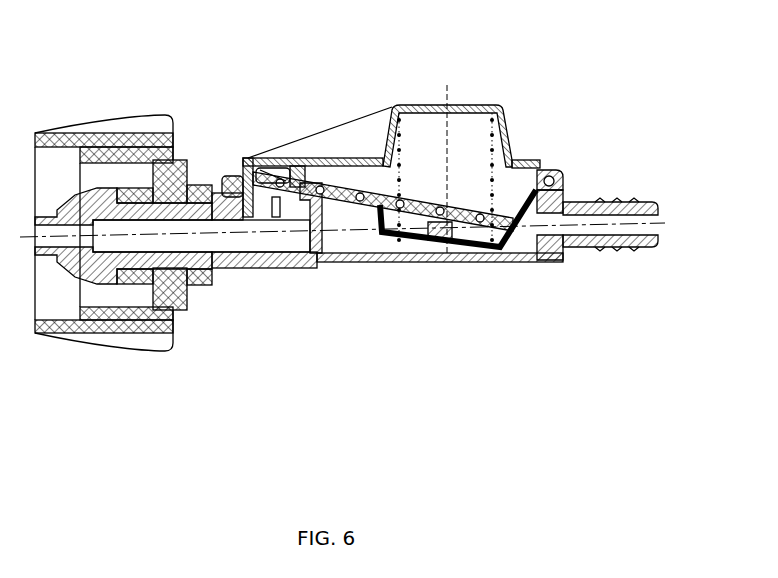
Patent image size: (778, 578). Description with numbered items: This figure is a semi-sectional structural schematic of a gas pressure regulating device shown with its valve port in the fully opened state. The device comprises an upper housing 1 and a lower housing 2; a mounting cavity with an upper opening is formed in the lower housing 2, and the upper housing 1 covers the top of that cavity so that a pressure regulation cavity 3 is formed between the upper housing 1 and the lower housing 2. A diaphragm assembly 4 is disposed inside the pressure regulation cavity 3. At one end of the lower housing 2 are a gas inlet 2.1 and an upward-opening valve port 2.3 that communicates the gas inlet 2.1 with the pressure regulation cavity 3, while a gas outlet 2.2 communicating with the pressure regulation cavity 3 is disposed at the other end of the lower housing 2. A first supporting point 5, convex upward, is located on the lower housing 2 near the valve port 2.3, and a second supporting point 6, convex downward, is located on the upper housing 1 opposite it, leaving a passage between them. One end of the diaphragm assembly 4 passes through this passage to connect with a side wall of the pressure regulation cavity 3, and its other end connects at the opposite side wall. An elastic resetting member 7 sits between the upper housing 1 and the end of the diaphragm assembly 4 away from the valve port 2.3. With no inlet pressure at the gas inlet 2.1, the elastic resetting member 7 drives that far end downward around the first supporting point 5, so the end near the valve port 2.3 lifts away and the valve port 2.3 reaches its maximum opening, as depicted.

The upper housing 1 is at (428, 102).
The lower housing 2 is at (303, 263).
The gas inlet 2.1 is at (247, 268).
The gas outlet 2.2 is at (594, 222).
The valve port 2.3 is at (248, 158).
The pressure regulation cavity 3 is at (458, 263).
The diaphragm assembly 4 is at (378, 208).
The first supporting point 5 is at (322, 206).
The second supporting point 6 is at (300, 190).
The elastic resetting member 7 is at (512, 150).